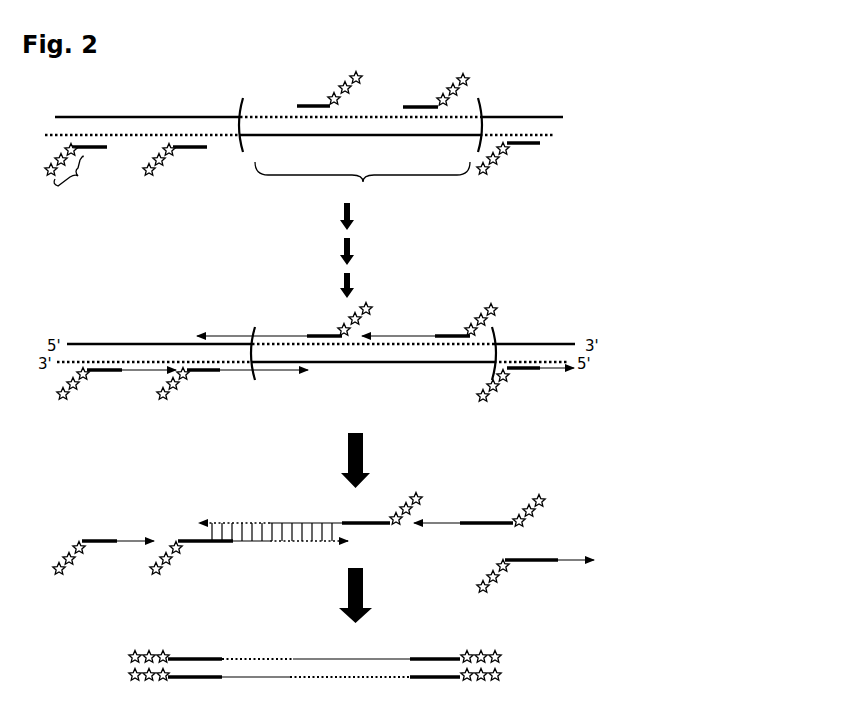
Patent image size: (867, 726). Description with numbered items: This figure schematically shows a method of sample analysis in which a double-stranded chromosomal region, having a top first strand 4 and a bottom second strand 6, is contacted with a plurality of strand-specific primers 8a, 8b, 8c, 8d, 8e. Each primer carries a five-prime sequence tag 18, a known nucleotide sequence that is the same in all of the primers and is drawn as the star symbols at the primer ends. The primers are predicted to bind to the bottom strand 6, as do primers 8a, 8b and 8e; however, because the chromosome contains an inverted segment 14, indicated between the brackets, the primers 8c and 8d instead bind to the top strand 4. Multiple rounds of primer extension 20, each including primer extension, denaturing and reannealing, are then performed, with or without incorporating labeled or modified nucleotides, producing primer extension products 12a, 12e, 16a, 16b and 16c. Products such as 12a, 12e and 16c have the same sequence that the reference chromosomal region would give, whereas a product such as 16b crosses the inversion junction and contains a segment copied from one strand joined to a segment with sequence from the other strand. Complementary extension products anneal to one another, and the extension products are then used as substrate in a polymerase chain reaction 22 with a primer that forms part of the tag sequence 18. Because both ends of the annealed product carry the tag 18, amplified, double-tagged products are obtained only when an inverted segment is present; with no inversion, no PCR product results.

The first strand 4 is at (141, 112).
The second strand 6 is at (127, 137).
The primer 8a is at (103, 150).
The primer 8b is at (190, 150).
The primer 8c is at (307, 97).
The primer 8d is at (413, 97).
The primer 8e is at (517, 146).
The primer extension product 12a is at (145, 375).
The primer extension product 12e is at (550, 373).
The inverted segment 14 is at (360, 149).
The primer extension product 16a is at (235, 375).
The primer extension product 16b is at (278, 332).
The primer extension product 16c is at (400, 332).
The 5' sequence tag 18 is at (78, 175).
The primer extension 20 is at (357, 250).
The polymerase chain reaction 22 is at (364, 595).